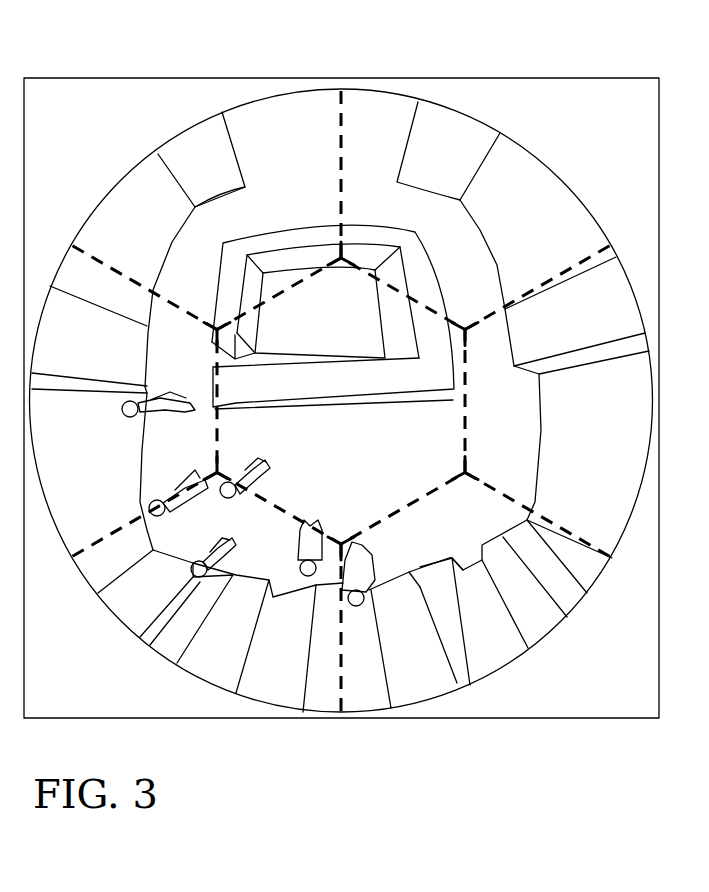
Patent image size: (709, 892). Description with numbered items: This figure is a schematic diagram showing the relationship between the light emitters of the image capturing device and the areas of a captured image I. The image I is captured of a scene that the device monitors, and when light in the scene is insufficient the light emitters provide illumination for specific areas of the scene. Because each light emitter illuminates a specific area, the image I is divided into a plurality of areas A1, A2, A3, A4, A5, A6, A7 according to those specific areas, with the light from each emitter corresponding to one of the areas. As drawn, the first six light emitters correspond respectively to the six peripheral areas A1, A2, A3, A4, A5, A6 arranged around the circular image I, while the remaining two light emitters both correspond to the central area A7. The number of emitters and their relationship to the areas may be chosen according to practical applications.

The image I is at (555, 78).
The area A1 is at (277, 198).
The area A2 is at (452, 170).
The area A3 is at (579, 458).
The area A4 is at (443, 532).
The area A5 is at (251, 553).
The area A6 is at (122, 466).
The area A7 is at (353, 440).